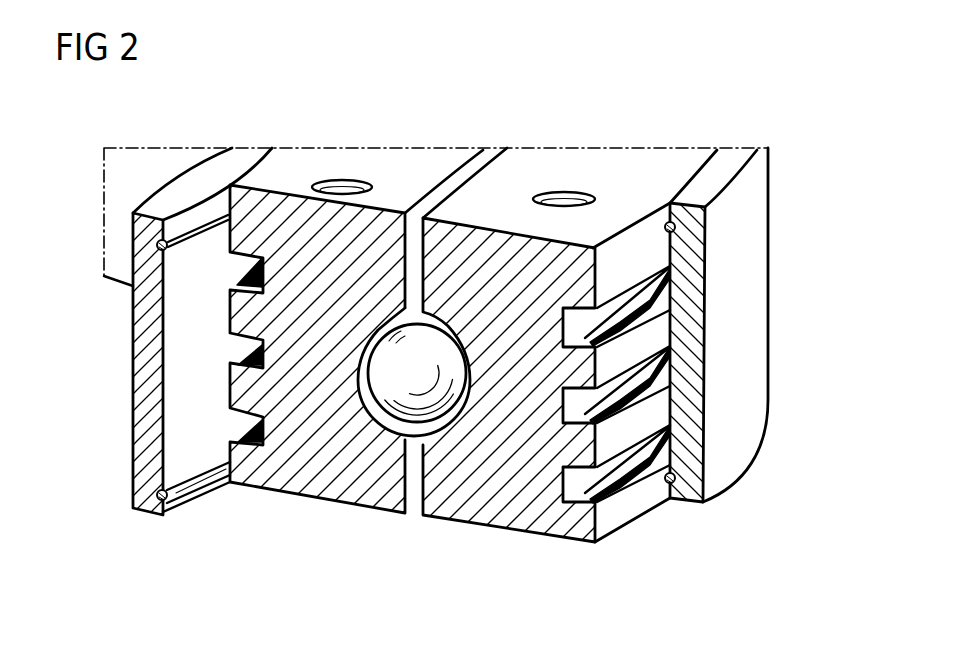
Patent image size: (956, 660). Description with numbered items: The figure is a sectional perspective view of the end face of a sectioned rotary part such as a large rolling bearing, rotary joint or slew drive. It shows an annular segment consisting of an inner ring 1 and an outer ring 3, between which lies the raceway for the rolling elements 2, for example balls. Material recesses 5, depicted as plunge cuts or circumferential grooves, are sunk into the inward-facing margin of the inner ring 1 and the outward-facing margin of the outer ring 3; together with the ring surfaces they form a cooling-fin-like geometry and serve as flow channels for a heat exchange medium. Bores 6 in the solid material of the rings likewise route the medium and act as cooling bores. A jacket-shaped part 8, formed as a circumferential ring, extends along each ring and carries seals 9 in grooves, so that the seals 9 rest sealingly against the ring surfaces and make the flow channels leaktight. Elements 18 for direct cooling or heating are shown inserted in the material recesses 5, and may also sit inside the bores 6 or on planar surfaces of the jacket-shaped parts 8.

The inner ring 1 is at (323, 465).
The rolling elements 2 is at (403, 383).
The outer ring 3 is at (510, 498).
The material recesses 5 is at (625, 387).
The bores 6 is at (344, 188).
The jacket-shaped part 8 is at (213, 185).
The seals 9 is at (157, 246).
The elements for direct cooling or heating 18 is at (643, 323).